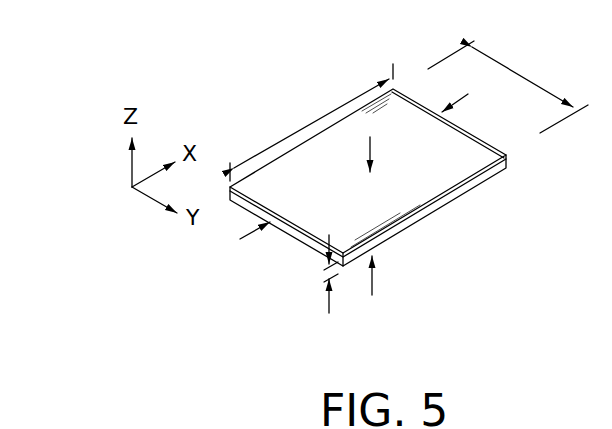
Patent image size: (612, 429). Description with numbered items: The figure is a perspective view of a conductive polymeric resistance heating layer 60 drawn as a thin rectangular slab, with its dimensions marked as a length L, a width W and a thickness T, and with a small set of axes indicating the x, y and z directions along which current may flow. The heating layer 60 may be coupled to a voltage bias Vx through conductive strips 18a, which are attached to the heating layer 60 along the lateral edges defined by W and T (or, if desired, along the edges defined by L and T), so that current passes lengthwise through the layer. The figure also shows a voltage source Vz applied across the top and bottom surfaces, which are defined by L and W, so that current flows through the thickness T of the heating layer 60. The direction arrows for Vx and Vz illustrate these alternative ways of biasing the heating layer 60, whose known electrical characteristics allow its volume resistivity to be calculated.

The conductive strips 18a is at (293, 231).
The conductive polymeric resistance heating layer 60 is at (487, 219).
The length dimension L is at (311, 122).
The width dimension W is at (508, 87).
The thickness dimension T is at (330, 288).
The voltage source Vz is at (387, 227).
The voltage bias Vx is at (355, 175).